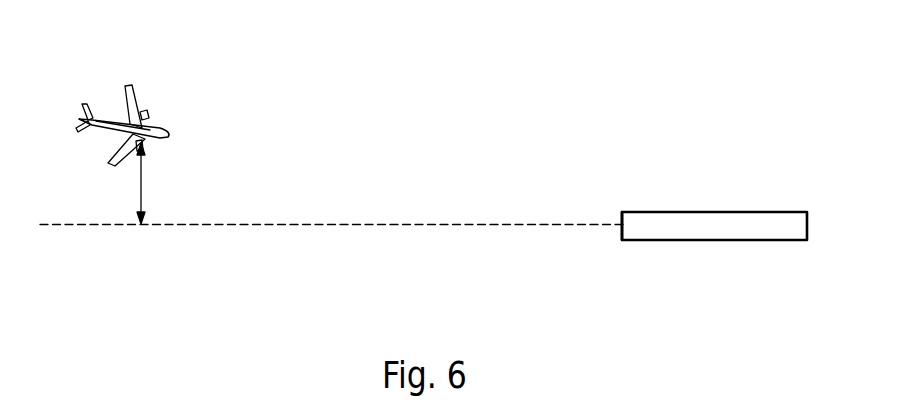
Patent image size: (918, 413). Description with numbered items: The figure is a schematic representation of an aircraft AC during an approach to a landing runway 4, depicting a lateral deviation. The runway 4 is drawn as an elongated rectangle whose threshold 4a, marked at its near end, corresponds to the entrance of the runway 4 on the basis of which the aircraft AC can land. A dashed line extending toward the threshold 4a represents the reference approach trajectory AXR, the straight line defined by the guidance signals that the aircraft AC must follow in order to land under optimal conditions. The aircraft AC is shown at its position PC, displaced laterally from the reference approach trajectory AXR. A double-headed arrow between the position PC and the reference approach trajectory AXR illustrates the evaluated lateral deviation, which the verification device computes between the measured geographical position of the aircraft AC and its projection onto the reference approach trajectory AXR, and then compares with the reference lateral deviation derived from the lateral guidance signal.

The aircraft AC is at (112, 117).
The position of the aircraft PC is at (148, 145).
The reference approach trajectory AXR is at (82, 227).
The runway 4 is at (740, 212).
The threshold 4a is at (622, 211).